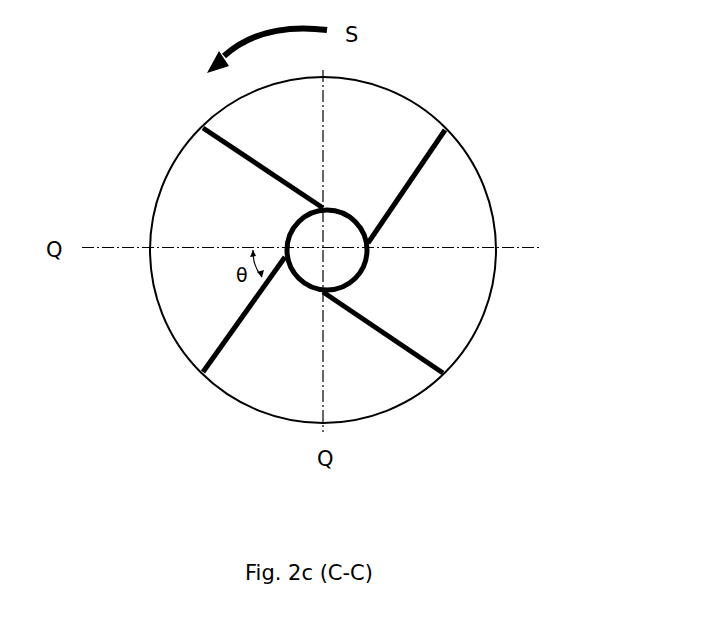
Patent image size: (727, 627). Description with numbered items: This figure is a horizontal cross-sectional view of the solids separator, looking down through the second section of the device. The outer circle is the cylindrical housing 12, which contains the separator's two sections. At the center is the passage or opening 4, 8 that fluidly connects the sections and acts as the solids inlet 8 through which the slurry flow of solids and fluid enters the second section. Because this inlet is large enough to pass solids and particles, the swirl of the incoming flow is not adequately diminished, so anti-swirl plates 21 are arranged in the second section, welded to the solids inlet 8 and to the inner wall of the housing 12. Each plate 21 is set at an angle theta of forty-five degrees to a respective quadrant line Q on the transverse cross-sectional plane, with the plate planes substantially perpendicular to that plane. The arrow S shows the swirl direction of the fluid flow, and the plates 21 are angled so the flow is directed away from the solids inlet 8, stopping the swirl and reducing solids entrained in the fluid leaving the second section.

The cylindrical housing 12 is at (473, 160).
The anti-swirl plates 21 is at (247, 162).
The passage or opening 4 is at (458, 281).
The solids inlet 8 is at (338, 262).